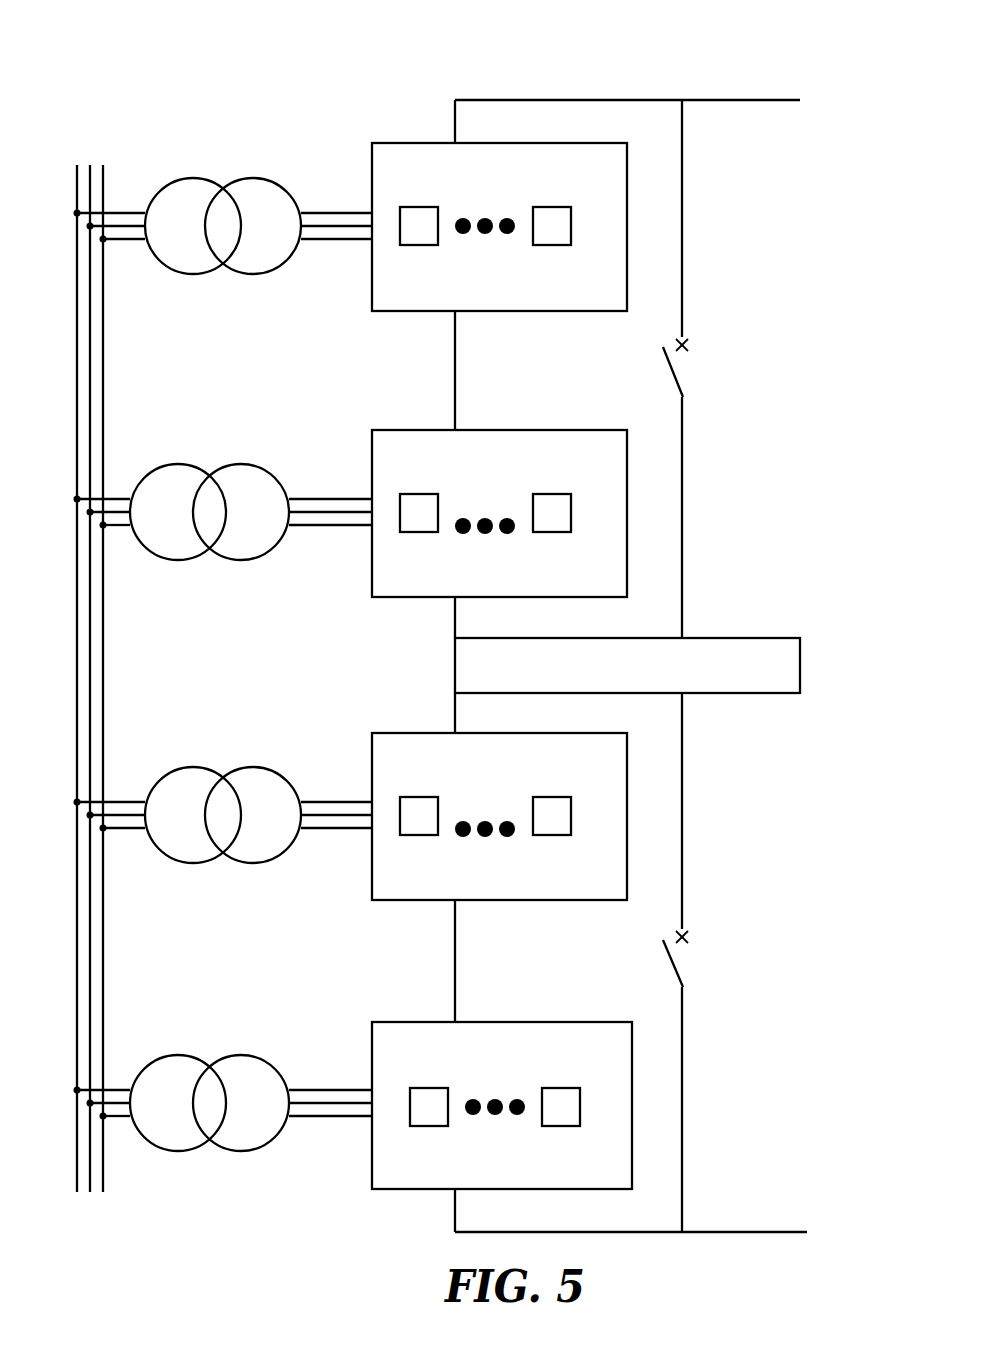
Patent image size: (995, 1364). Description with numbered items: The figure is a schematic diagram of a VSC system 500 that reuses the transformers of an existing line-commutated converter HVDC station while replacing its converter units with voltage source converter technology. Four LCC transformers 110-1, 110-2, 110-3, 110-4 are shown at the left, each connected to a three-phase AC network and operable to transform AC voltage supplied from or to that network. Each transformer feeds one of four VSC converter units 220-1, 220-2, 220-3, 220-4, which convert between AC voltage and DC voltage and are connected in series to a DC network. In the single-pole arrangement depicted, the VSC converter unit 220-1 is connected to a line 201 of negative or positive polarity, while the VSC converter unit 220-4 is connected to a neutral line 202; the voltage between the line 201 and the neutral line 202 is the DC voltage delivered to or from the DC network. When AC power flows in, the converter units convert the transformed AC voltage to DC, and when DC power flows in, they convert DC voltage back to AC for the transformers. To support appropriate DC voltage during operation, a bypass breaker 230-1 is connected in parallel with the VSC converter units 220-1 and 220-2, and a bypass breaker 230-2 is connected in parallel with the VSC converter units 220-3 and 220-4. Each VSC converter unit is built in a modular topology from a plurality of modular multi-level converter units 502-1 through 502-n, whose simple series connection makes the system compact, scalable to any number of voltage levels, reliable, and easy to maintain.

The VSC system 500 is at (93, 53).
The line 201 is at (768, 100).
The neutral line 202 is at (772, 1232).
The LCC transformer 110-1 is at (223, 189).
The LCC transformer 110-2 is at (210, 476).
The LCC transformer 110-3 is at (223, 778).
The LCC transformer 110-4 is at (210, 1067).
The VSC converter unit 220-1 is at (495, 143).
The VSC converter unit 220-2 is at (495, 430).
The VSC converter unit 220-3 is at (495, 733).
The VSC converter unit 220-4 is at (495, 1022).
The bypass breaker 230-1 is at (729, 368).
The bypass breaker 230-2 is at (720, 948).
The modular multi-level converter unit 502-1 is at (418, 245).
The modular multi-level converter unit 502-n is at (551, 245).